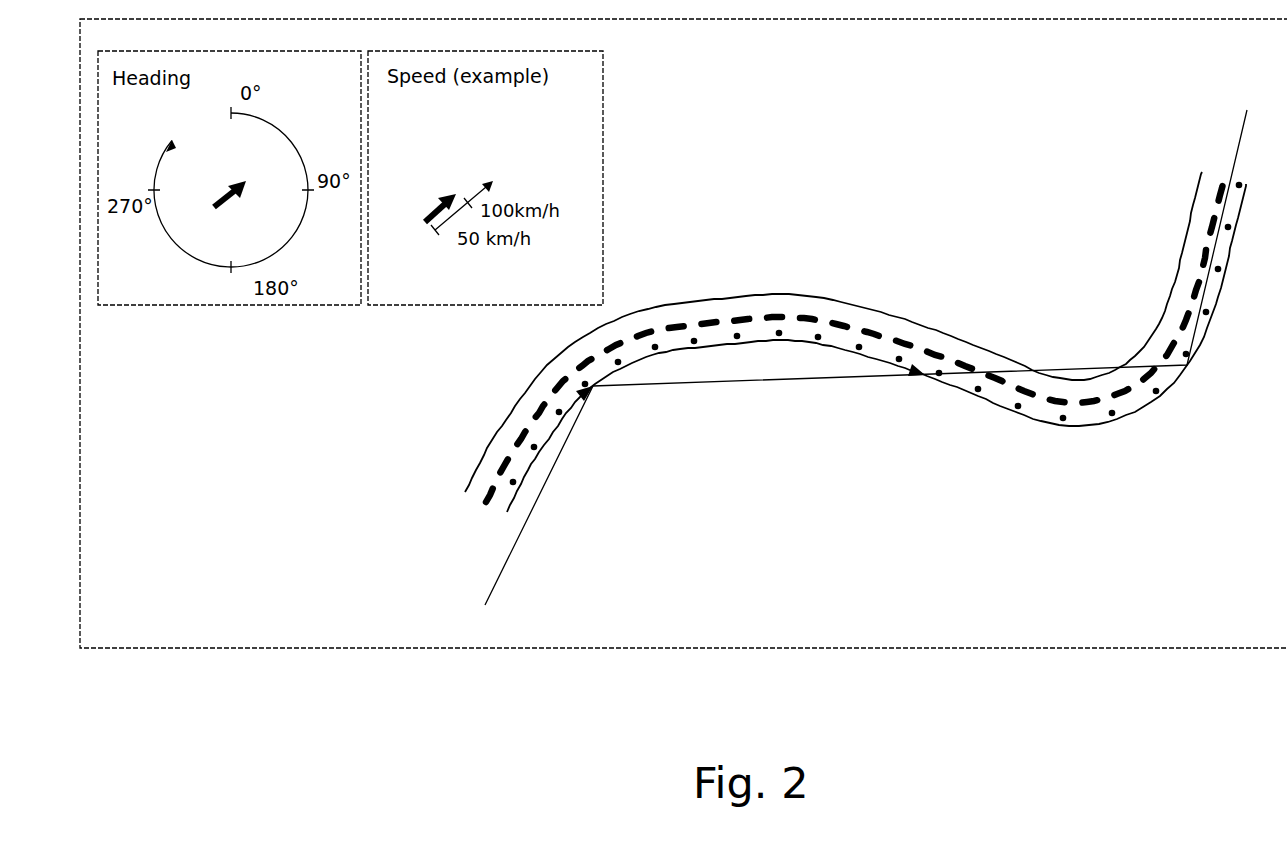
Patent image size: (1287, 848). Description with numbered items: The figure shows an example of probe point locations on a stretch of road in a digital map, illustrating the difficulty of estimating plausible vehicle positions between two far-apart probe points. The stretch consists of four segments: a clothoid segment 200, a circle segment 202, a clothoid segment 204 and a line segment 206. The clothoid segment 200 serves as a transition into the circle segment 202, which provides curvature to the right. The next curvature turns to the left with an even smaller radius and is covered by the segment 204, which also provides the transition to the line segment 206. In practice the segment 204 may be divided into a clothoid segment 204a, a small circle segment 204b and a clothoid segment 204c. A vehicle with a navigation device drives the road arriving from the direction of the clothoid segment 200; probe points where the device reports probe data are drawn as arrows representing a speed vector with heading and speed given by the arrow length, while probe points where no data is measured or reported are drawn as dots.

The clothoid segment 200 is at (442, 508).
The circle segment 202 is at (535, 357).
The clothoid segment 204 is at (1158, 313).
The clothoid segment 204a is at (906, 376).
The small circle segment 204b is at (1109, 438).
The clothoid segment 204c is at (1221, 335).
The line segment 206 is at (1196, 139).